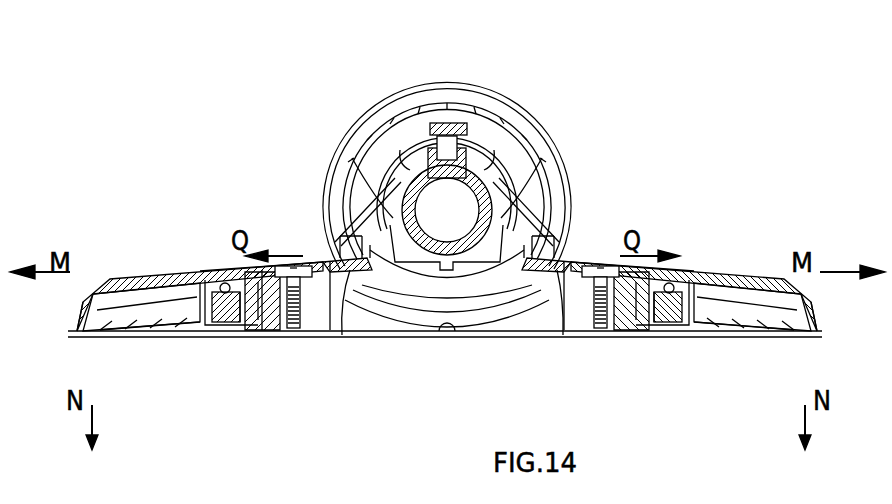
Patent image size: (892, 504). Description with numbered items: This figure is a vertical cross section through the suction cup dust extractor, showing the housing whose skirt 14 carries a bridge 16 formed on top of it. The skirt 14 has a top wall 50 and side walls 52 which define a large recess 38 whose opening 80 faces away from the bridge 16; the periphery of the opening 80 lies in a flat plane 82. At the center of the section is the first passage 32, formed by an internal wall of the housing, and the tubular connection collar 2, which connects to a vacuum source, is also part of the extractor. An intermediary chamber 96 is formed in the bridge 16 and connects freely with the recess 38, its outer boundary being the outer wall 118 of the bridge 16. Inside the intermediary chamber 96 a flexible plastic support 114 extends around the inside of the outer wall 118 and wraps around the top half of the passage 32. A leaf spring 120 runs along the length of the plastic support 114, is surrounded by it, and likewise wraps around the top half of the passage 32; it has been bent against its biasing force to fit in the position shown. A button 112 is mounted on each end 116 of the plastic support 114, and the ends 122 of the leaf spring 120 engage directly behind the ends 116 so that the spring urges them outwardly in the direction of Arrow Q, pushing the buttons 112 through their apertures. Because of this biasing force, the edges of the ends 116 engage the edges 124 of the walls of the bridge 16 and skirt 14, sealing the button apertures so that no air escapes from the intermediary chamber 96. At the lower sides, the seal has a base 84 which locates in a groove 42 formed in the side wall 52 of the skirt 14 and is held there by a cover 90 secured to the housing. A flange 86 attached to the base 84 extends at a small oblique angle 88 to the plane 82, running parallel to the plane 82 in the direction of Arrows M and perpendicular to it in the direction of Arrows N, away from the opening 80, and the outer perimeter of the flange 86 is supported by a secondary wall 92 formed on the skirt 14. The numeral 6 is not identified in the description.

The connection collar 2 is at (473, 98).
The housing 6 is at (495, 98).
The skirt 14 is at (712, 266).
The bridge 16 is at (525, 108).
The first passage 32 is at (437, 224).
The recess 38 is at (520, 318).
The groove 42 is at (217, 340).
The top wall 50 is at (278, 265).
The side walls 52 is at (200, 290).
The opening 80 is at (401, 345).
The plane 82 is at (456, 342).
The base 84 is at (238, 340).
The flange 86 is at (120, 340).
The angle 88 is at (165, 338).
The cover 90 is at (266, 336).
The secondary wall 92 is at (82, 308).
The intermediary chamber 96 is at (390, 186).
The button 112 is at (335, 236).
The flexible plastic support 114 is at (430, 125).
The end of the plastic support 116 is at (322, 262).
The outer wall 118 is at (433, 100).
The leaf spring 120 is at (398, 165).
The ends of the leaf spring 122 is at (360, 222).
The edges 124 is at (343, 336).